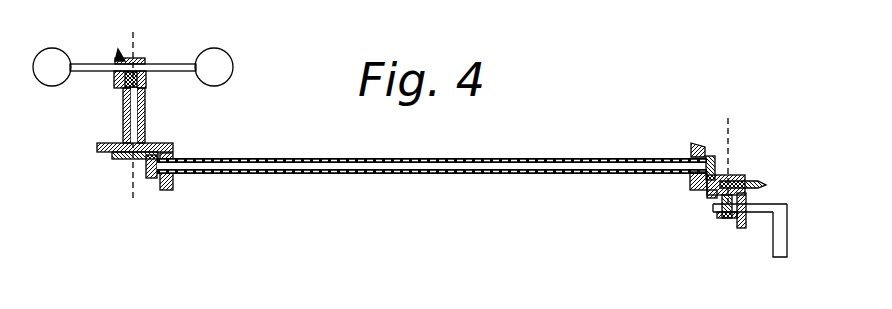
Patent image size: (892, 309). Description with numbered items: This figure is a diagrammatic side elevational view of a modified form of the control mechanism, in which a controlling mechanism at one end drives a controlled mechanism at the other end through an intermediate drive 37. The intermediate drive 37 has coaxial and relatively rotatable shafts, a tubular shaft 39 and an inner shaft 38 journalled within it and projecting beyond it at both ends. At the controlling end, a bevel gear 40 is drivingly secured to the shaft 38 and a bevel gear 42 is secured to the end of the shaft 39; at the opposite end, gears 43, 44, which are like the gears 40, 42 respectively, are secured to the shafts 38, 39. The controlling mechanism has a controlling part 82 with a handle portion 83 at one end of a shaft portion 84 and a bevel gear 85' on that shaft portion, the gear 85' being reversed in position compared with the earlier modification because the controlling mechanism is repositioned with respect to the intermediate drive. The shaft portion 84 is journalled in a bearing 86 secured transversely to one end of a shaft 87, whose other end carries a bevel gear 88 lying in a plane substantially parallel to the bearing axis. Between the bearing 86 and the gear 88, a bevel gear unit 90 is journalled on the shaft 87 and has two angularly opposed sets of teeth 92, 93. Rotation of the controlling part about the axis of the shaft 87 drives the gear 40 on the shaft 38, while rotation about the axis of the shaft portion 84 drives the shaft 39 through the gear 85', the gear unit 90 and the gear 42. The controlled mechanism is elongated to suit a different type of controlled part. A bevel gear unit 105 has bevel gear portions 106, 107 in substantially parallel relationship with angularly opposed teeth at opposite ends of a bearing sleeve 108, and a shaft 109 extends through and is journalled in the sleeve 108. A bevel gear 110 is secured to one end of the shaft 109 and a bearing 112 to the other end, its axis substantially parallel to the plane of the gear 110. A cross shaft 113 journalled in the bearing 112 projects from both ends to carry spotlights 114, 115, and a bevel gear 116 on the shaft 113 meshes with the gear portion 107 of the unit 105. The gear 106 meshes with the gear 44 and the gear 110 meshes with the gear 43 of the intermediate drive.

The intermediate drive 37 is at (462, 157).
The shaft 38 is at (525, 170).
The shaft 39 is at (503, 175).
The bevel gear 40 is at (707, 157).
The bevel gear 42 is at (690, 150).
The gear 43 is at (152, 162).
The gear 44 is at (168, 186).
The controlling part 82 is at (782, 210).
The handle portion 83 is at (782, 245).
The shaft portion 84 is at (760, 205).
The bevel gear 85' is at (728, 242).
The bearing 86 is at (722, 220).
The shaft 87 is at (740, 175).
The bevel gear 88 is at (731, 176).
The bevel gear unit 90 is at (705, 190).
The teeth 92 is at (712, 197).
The teeth 93 is at (763, 184).
The bevel gear unit 105 is at (143, 121).
The bevel gear portion 106 is at (97, 147).
The bevel gear portion 107 is at (147, 78).
The bearing sleeve 108 is at (123, 98).
The shaft 109 is at (133, 118).
The bevel gear 110 is at (125, 160).
The bearing 112 is at (134, 60).
The cross shaft 113 is at (90, 65).
The spotlight 114 is at (50, 58).
The spotlight 115 is at (223, 56).
The bevel gear 116 is at (118, 52).